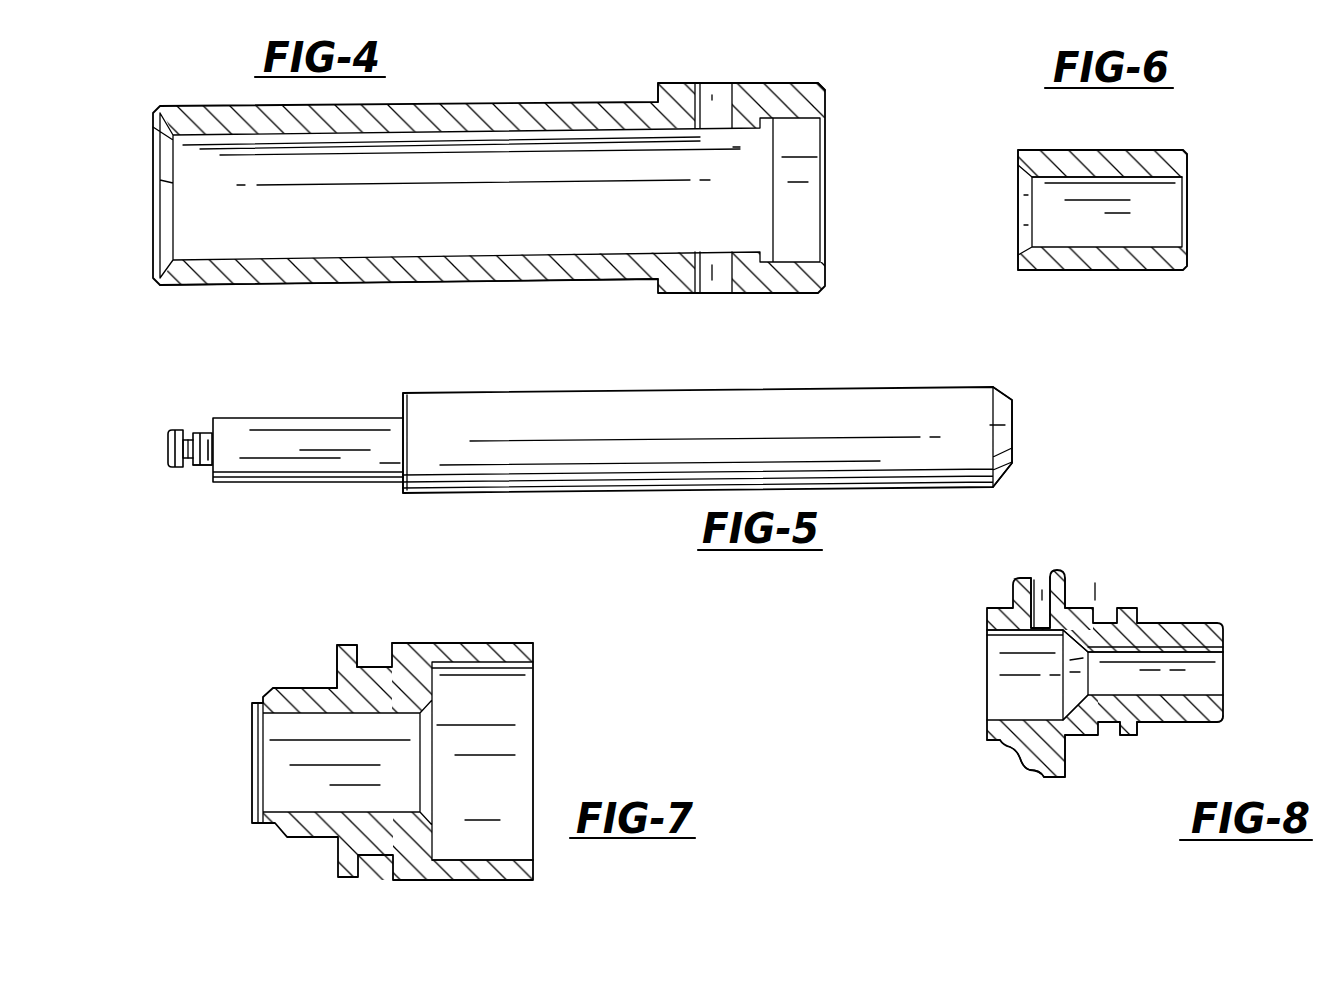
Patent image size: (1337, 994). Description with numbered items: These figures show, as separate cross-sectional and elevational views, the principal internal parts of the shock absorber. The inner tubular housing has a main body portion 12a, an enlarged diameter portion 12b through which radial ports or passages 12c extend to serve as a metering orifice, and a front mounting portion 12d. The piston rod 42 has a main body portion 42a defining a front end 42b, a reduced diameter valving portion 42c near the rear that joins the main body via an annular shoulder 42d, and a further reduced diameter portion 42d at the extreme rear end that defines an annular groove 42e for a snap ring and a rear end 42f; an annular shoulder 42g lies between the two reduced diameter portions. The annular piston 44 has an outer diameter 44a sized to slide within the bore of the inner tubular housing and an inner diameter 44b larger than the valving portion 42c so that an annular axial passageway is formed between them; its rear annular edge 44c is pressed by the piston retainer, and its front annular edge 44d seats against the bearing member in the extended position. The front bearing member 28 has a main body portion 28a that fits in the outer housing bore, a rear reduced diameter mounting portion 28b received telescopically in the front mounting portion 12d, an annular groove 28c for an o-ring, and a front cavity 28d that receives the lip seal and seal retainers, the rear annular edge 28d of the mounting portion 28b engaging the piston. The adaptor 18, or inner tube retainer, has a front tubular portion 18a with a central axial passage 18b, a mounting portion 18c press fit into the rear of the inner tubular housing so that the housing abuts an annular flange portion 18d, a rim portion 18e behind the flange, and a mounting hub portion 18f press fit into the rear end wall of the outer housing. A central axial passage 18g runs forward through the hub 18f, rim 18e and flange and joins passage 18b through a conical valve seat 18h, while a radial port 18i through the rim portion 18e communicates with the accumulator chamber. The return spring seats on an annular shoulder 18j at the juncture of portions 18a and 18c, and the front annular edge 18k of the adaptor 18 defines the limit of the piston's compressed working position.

In FIG. 4, the main body portion 12a is at (443, 283).
In FIG. 4, the enlarged diameter portion 12b is at (683, 83).
In FIG. 4, the ports or passages 12c is at (700, 113).
In FIG. 4, the front mounting portion 12d is at (790, 83).
In FIG. 5, the piston rod 42 is at (601, 440).
In FIG. 5, the main body portion 42a is at (620, 391).
In FIG. 5, the front end 42b is at (1015, 452).
In FIG. 5, the reduced diameter valving portion 42c is at (295, 417).
In FIG. 5, the annular shoulder and further reduced diameter portion 42d is at (403, 396).
In FIG. 5, the annular groove 42e is at (190, 470).
In FIG. 5, the rear end 42f is at (165, 448).
In FIG. 5, the annular shoulder 42g is at (208, 428).
In FIG. 6, the piston 44 is at (1210, 168).
In FIG. 6, the outer diameter 44a is at (1063, 150).
In FIG. 6, the inner diameter 44b is at (1043, 180).
In FIG. 6, the rear annular edge 44c is at (1018, 270).
In FIG. 6, the front annular edge 44d is at (1190, 258).
In FIG. 7, the bearing member 28 is at (427, 640).
In FIG. 7, the main body portion 28a is at (520, 642).
In FIG. 7, the rear reduced diameter mounting portion 28b is at (297, 690).
In FIG. 7, the annular groove 28c is at (357, 652).
In FIG. 7, the front cavity / rear annular edge 28d is at (468, 860).
In FIG. 8, the adaptor 18 is at (1158, 595).
In FIG. 8, the front tubular portion 18a is at (1197, 623).
In FIG. 8, the central axial passage 18b is at (1227, 647).
In FIG. 8, the mounting portion 18c is at (1083, 607).
In FIG. 8, the annular flange portion 18d is at (1063, 777).
In FIG. 8, the rim portion 18e is at (1037, 773).
In FIG. 8, the mounting hub portion 18f is at (1003, 747).
In FIG. 8, the central axial passage 18g is at (990, 657).
In FIG. 8, the conical valve seat 18h is at (1083, 700).
In FIG. 8, the radial port or passage 18i is at (1043, 583).
In FIG. 8, the annular shoulder 18j is at (1143, 727).
In FIG. 8, the front annular edge 18k is at (1233, 703).